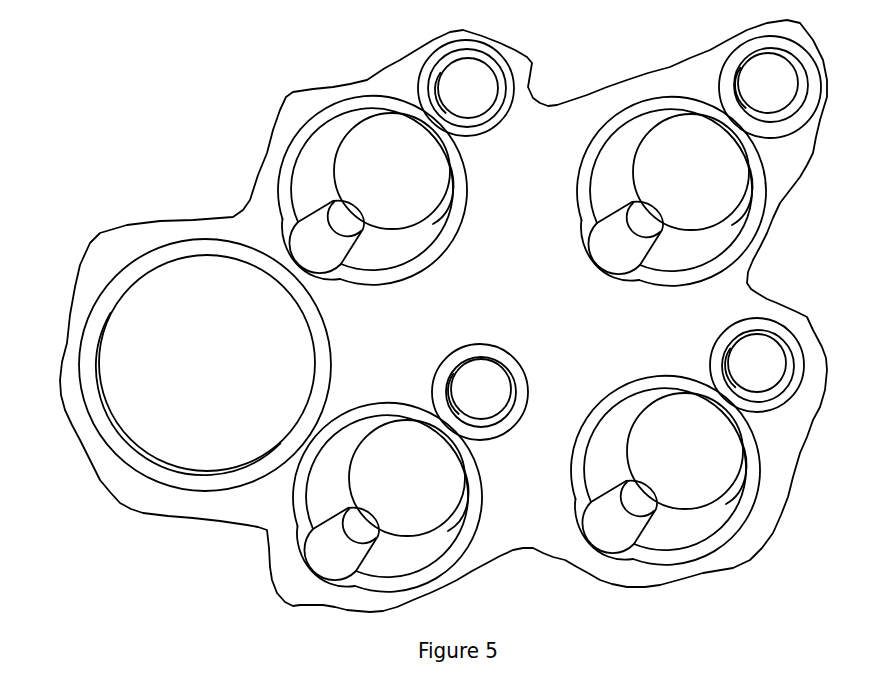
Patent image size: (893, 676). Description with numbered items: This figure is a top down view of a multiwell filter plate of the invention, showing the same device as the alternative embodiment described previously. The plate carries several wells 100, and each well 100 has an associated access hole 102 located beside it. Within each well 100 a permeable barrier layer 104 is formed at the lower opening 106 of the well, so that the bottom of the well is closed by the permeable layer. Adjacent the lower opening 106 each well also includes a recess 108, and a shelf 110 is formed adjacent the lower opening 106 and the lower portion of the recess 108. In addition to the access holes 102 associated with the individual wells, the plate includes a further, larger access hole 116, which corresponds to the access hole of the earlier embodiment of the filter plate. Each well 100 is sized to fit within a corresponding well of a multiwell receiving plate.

The well 100 is at (338, 190).
The access hole 102 is at (465, 87).
The permeable barrier layer 104 is at (393, 171).
The lower opening 106 is at (407, 189).
The recess 108 is at (333, 273).
The shelf 110 is at (387, 267).
The access hole 116 is at (197, 332).